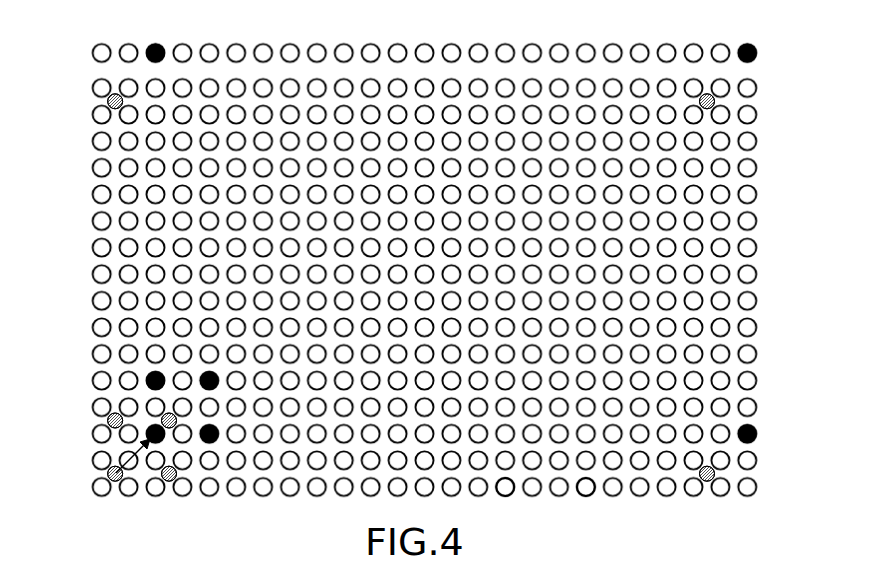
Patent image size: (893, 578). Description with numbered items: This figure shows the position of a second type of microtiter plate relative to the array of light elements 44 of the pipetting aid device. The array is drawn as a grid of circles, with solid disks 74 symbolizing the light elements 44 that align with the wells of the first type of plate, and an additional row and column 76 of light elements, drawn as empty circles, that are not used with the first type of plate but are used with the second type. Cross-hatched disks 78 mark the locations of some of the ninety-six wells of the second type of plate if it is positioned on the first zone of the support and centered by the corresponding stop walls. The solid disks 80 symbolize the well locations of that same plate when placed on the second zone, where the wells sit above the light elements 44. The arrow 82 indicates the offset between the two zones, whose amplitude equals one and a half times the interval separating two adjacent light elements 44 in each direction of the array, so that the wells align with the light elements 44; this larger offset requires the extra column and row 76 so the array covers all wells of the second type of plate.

The light elements 44 is at (588, 496).
The solid disks 74 is at (505, 496).
The additional row and column of light elements 76 is at (612, 46).
The cross-hatched disks 78 is at (116, 481).
The solid disks 80 is at (150, 426).
The arrow 82 is at (124, 458).